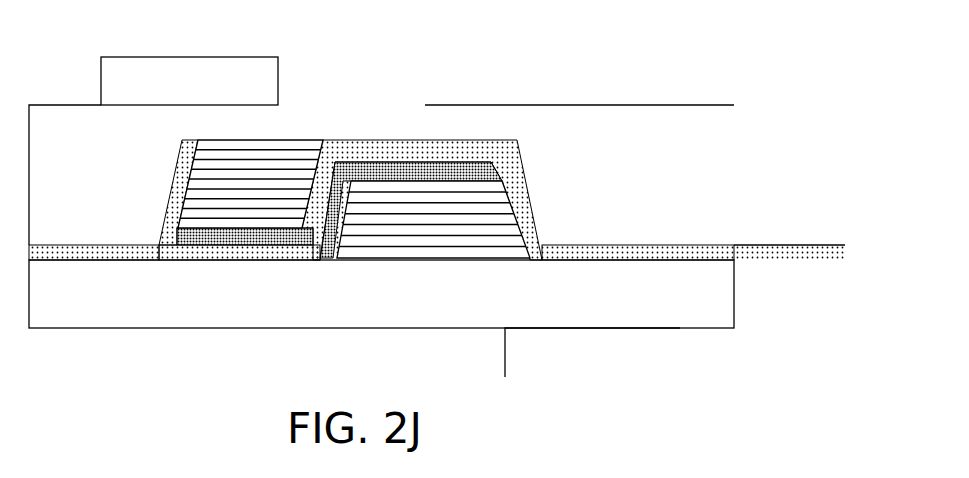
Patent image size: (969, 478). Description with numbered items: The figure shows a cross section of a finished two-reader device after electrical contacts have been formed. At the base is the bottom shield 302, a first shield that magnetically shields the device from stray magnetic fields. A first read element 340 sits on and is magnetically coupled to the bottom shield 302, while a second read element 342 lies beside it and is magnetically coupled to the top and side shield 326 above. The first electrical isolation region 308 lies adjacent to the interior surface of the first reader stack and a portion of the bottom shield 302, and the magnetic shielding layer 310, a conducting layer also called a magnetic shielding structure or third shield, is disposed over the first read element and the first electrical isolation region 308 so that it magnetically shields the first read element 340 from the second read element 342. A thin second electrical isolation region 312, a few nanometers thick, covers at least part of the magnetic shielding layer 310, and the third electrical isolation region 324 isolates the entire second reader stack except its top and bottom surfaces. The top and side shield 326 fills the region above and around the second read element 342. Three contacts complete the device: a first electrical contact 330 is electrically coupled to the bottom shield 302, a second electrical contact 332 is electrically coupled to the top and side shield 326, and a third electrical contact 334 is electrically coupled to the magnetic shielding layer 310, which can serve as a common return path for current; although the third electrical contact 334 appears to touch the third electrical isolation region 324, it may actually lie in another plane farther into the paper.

The bottom shield 302 is at (381, 293).
The first electrical isolation region 308 is at (253, 263).
The magnetic shielding layer 310 is at (218, 245).
The second electrical isolation region 312 is at (416, 140).
The third electrical isolation region 324 is at (88, 255).
The top and side shield 326 is at (142, 161).
The first electrical contact 330 is at (600, 359).
The second electrical contact 332 is at (197, 86).
The third electrical contact 334 is at (822, 235).
The first read element 340 is at (450, 230).
The second read element 342 is at (278, 191).